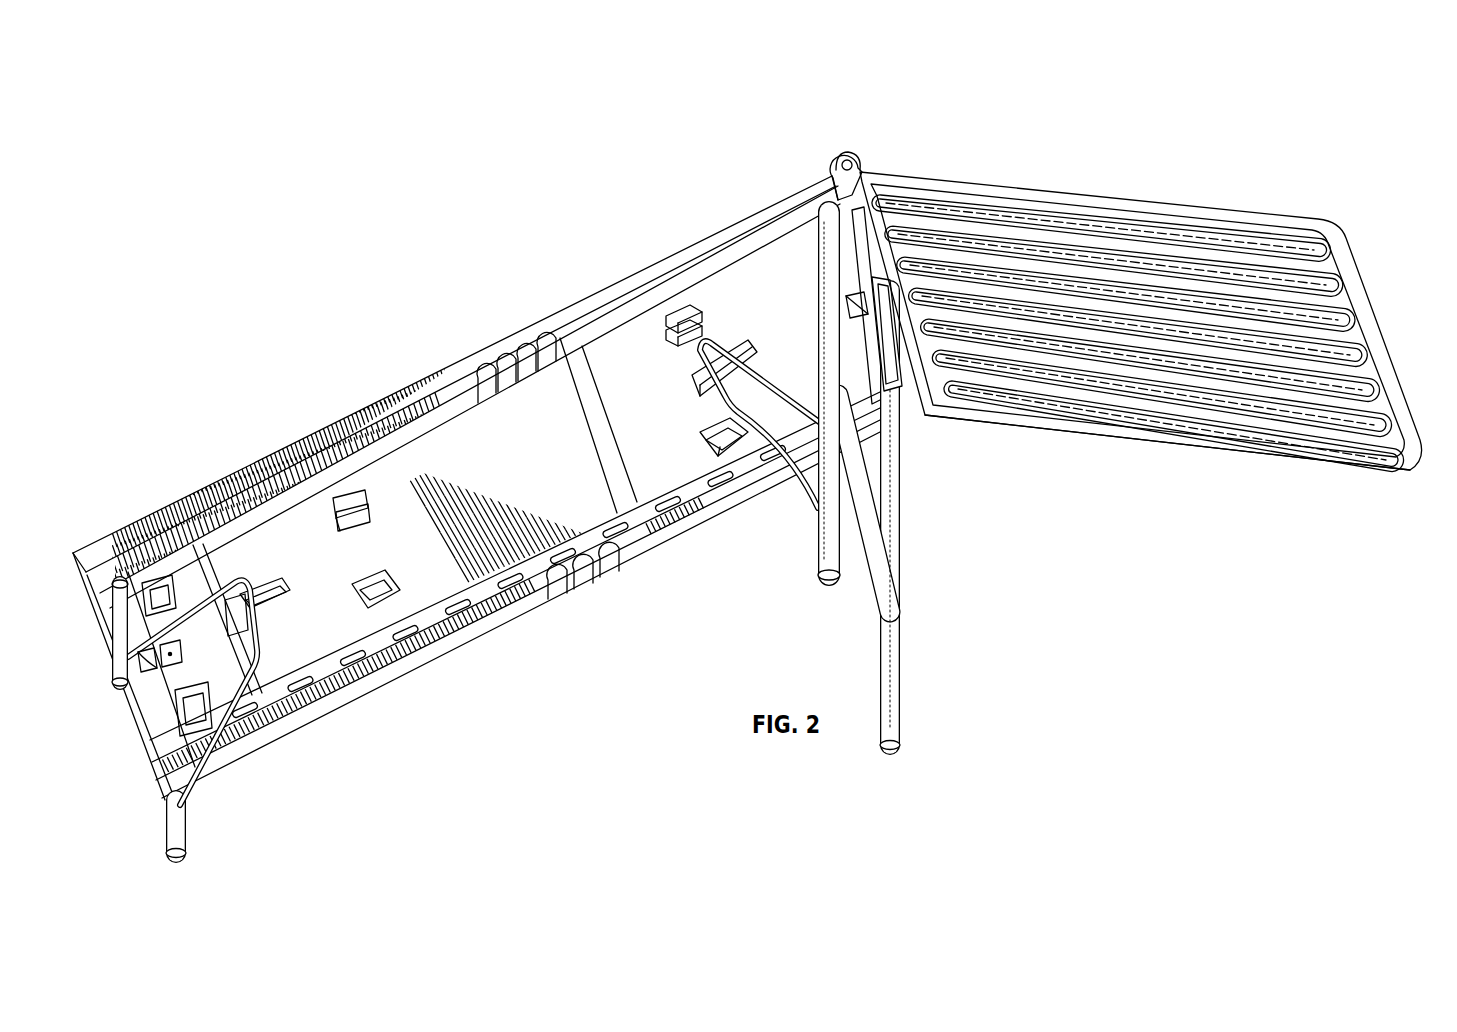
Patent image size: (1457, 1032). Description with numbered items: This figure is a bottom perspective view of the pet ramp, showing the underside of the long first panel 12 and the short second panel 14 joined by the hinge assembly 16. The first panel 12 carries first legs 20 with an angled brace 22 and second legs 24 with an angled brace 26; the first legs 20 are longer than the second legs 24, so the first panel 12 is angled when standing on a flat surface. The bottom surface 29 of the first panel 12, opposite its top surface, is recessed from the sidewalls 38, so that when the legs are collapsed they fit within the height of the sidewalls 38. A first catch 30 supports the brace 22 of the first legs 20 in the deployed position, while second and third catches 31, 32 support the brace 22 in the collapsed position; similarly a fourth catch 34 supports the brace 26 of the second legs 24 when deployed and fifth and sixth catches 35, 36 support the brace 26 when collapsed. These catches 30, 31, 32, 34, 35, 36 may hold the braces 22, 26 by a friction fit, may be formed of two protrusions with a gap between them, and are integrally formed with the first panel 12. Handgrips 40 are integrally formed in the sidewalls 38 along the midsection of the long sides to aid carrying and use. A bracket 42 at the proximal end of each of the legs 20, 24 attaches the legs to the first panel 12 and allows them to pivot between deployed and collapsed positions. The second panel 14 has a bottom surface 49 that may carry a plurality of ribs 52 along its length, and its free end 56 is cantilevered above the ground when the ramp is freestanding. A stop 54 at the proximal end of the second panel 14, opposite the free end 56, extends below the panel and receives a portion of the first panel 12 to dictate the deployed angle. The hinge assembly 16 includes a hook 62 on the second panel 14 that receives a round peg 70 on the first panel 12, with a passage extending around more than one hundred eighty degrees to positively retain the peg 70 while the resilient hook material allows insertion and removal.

The first panel 12 is at (322, 429).
The second panel 14 is at (968, 180).
The hinge assembly 16 is at (852, 144).
The first legs 20 is at (840, 580).
The angled brace 22 is at (802, 492).
The second legs 24 is at (187, 834).
The angled brace 26 is at (252, 668).
The bottom surface 29 is at (395, 546).
The first catch 30 is at (690, 388).
The second catch 31 is at (700, 300).
The third catch 32 is at (705, 448).
The fourth catch 34 is at (258, 584).
The fifth catch 35 is at (328, 527).
The sixth catch 36 is at (364, 604).
The sidewalls 38 is at (455, 402).
The handgrips 40 is at (486, 360).
The bracket 42 is at (146, 668).
The bottom surface 49 is at (1256, 452).
The ribs 52 is at (1400, 452).
The stop 54 is at (912, 384).
The free end 56 is at (1358, 268).
The hook 62 is at (843, 152).
The peg 70 is at (840, 165).